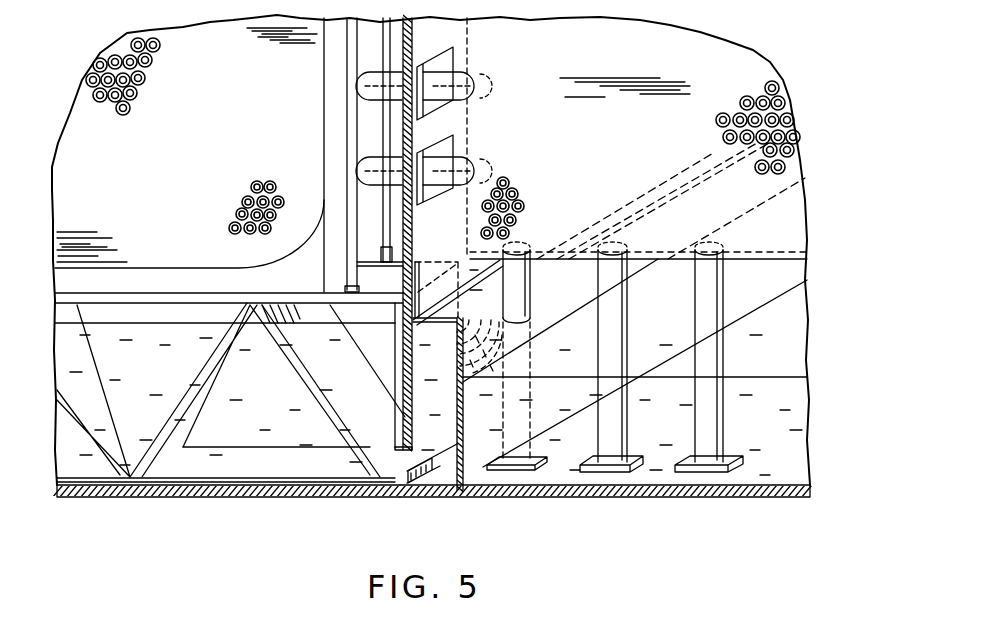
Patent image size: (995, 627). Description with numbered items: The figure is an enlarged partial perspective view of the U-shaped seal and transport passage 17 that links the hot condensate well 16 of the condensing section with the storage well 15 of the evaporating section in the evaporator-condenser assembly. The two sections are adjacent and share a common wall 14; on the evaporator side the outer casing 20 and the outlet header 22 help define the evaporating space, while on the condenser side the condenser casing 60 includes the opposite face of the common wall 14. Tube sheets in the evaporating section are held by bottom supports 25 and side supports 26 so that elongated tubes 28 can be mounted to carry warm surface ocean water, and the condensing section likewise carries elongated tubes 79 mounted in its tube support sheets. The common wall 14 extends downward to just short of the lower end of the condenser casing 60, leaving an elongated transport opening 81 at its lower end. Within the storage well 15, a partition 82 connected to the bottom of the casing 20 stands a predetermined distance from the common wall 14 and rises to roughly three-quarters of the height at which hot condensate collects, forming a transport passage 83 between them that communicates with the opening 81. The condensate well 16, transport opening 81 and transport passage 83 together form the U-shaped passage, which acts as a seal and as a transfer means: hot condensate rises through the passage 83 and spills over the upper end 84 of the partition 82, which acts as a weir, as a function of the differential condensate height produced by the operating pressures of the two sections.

The common wall 14 is at (412, 240).
The storage well 15 is at (763, 303).
The condensate well 16 is at (230, 387).
The U-shaped seal and transport passage 17 is at (400, 374).
The evaporating section casing 20 is at (700, 494).
The outlet header 22 is at (655, 240).
The bottom supports 25 is at (532, 295).
The side supports 26 is at (458, 83).
The elongated tubes 28 is at (524, 192).
The condenser casing 60 is at (157, 497).
The condenser tubes 79 is at (146, 80).
The transport opening 81 is at (430, 450).
The partition 82 is at (457, 410).
The transport passage 83 is at (440, 390).
The upper end of partition 84 is at (491, 308).